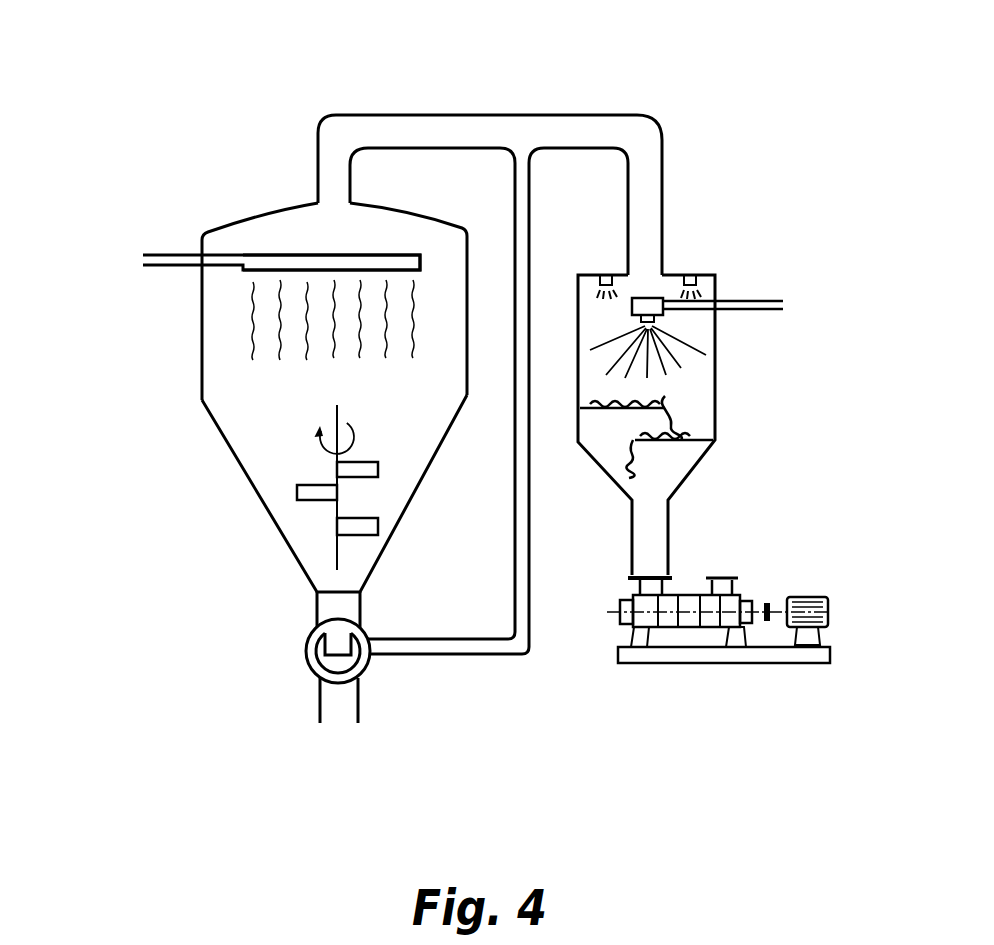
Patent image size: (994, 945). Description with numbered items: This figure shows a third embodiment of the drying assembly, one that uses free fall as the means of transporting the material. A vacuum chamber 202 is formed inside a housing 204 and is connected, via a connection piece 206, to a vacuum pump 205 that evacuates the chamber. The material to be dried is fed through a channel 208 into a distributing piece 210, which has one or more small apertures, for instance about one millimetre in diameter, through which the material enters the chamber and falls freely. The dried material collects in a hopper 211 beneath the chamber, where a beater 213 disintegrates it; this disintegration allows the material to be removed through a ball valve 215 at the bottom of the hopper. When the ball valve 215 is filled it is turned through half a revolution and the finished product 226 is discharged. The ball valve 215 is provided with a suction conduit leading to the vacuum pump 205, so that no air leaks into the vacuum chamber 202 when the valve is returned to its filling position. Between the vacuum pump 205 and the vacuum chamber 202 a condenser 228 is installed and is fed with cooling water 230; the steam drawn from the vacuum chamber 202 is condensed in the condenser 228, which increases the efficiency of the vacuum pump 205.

The vacuum chamber 202 is at (298, 408).
The dryer vessel 204 is at (225, 227).
The vacuum pump 205 is at (690, 603).
The connection piece 206 is at (476, 108).
The channel 208 is at (130, 262).
The distributing piece 210 is at (297, 250).
The hopper 211 is at (233, 453).
The beater 213 is at (330, 518).
The ball valve 215 is at (322, 652).
The finished product 226 is at (342, 720).
The condenser 228 is at (730, 383).
The cooling water 230 is at (802, 305).